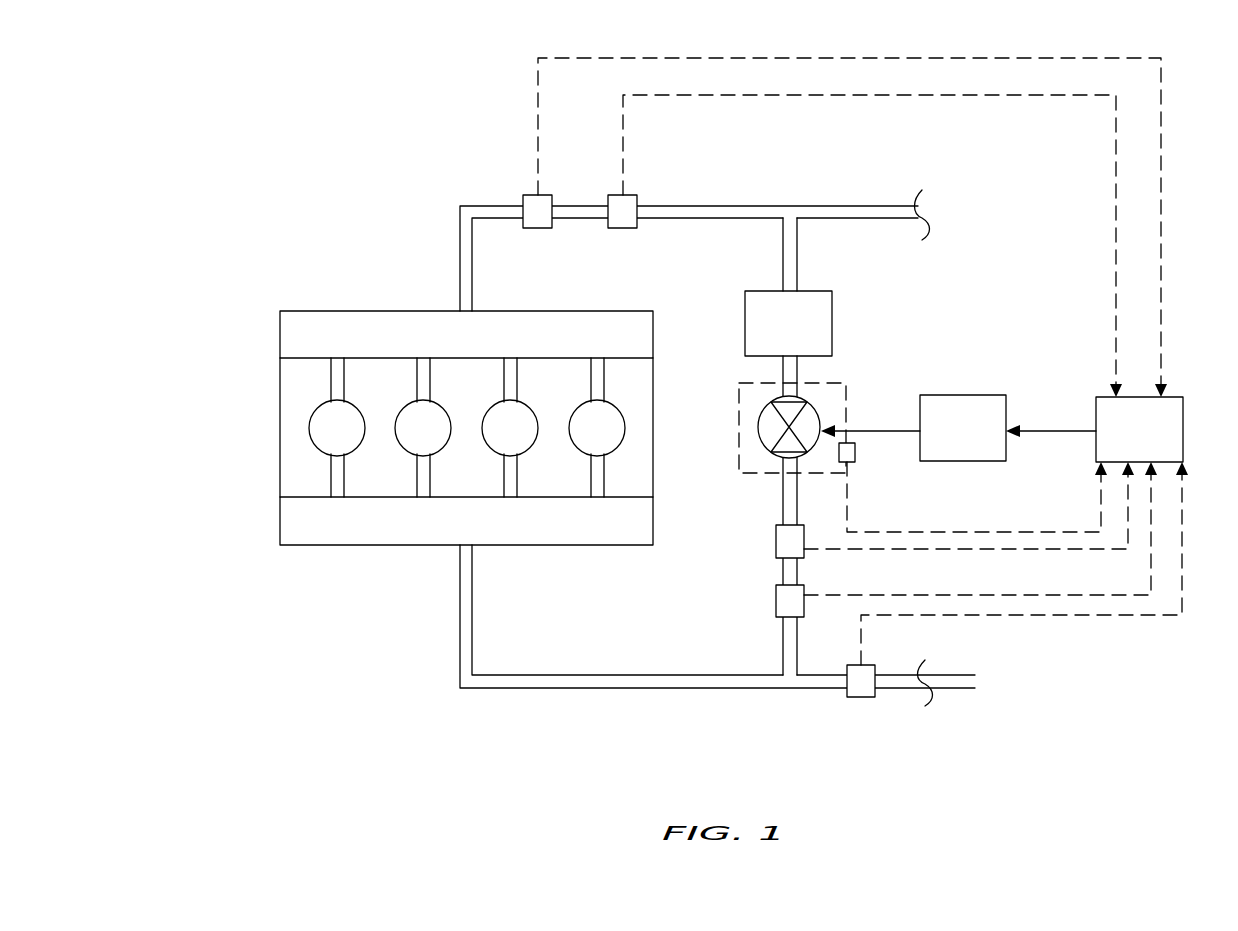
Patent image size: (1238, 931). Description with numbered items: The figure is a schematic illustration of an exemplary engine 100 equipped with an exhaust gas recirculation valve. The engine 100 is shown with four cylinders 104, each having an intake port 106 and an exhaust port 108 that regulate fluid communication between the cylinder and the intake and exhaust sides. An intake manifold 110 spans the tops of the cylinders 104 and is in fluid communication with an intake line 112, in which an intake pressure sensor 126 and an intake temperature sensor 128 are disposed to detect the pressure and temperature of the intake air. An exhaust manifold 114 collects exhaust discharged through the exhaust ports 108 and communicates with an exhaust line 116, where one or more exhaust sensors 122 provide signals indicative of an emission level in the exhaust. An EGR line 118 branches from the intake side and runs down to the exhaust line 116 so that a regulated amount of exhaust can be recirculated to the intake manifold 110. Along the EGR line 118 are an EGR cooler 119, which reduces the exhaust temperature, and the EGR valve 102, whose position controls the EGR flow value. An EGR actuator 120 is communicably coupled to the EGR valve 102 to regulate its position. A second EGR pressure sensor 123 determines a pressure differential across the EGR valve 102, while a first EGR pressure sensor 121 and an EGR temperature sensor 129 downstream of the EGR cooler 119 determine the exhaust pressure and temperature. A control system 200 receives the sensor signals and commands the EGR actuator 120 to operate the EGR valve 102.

The engine 100 is at (240, 100).
The EGR valve 102 is at (815, 410).
The cylinder 104 is at (309, 428).
The intake port 106 is at (333, 396).
The exhaust port 108 is at (333, 460).
The intake manifold 110 is at (466, 334).
The intake line 112 is at (745, 207).
The exhaust manifold 114 is at (466, 451).
The exhaust line 116 is at (623, 682).
The EGR line 118 is at (790, 250).
The EGR cooler 119 is at (788, 323).
The EGR actuator 120 is at (913, 428).
The first EGR pressure sensor 121 is at (776, 541).
The exhaust sensor 122 is at (861, 698).
The second EGR pressure sensor 123 is at (857, 452).
The intake pressure sensor 126 is at (528, 196).
The intake temperature sensor 128 is at (633, 196).
The EGR temperature sensor 129 is at (776, 599).
The control system 200 is at (1094, 429).